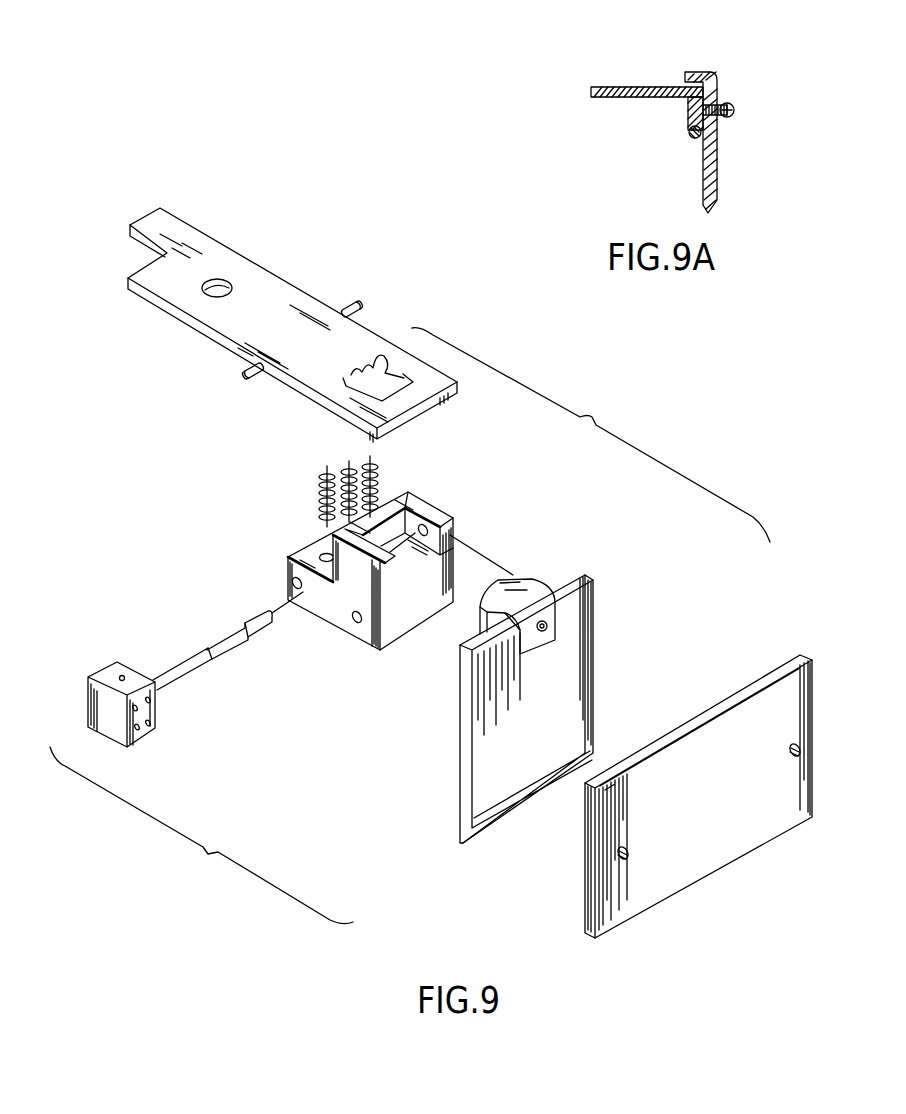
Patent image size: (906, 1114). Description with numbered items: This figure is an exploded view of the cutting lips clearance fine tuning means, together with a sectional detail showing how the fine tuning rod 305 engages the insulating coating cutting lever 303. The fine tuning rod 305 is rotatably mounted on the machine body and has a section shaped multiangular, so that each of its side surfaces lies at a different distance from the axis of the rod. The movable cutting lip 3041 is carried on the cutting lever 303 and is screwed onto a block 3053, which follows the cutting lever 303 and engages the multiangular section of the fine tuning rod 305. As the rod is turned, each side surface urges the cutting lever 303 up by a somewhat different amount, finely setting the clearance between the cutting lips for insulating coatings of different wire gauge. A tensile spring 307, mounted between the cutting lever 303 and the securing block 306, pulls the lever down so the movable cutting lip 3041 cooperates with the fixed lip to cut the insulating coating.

In FIG. 9, the insulating coating cutting lever 303 is at (283, 293).
In FIG. 9A, the insulating coating cutting lever 303 is at (618, 87).
In FIG. 9, the fine tuning rod 305 is at (188, 668).
In FIG. 9A, the fine tuning rod 305 is at (692, 136).
In FIG. 9, the securing block 306 is at (348, 604).
In FIG. 9, the tensile spring 307 is at (318, 478).
In FIG. 9, the movable cutting lip 3041 is at (583, 712).
In FIG. 9A, the movable cutting lip 3041 is at (717, 163).
In FIG. 9, the block 3053 is at (480, 624).
In FIG. 9A, the block 3053 is at (690, 105).